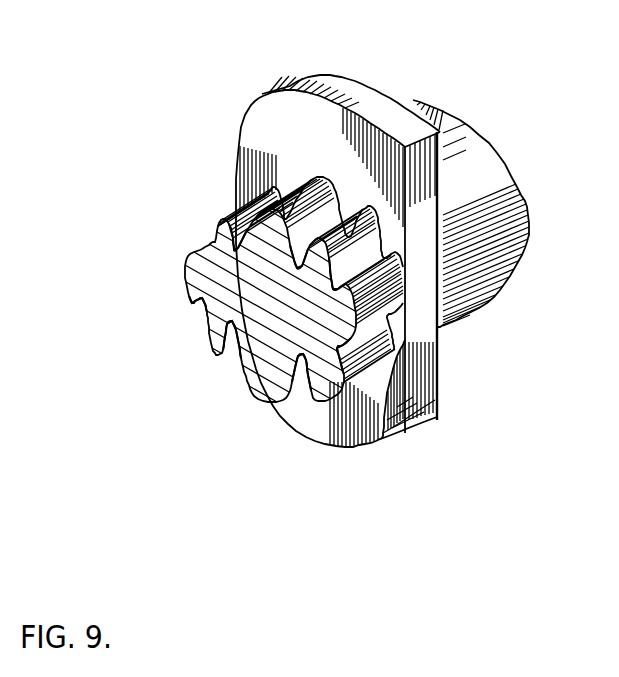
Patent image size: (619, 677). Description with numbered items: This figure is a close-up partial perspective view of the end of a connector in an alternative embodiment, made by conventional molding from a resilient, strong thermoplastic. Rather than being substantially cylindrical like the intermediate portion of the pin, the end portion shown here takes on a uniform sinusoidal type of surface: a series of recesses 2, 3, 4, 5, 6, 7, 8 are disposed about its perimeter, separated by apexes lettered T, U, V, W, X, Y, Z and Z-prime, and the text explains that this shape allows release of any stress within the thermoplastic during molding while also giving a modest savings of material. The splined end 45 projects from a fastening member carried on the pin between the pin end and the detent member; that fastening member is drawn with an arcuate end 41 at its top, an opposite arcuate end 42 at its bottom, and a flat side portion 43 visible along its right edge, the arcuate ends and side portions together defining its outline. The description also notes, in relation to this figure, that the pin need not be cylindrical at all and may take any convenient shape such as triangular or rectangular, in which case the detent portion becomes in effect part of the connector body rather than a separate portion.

The arcuate end 41 is at (375, 91).
The arcuate end 42 is at (406, 436).
The side portion 43 is at (440, 331).
The splined shaft end 45 is at (276, 323).
The recess 2 is at (237, 237).
The recess 3 is at (299, 255).
The recess 4 is at (337, 273).
The recess 5 is at (341, 356).
The recess 6 is at (301, 372).
The recess 7 is at (232, 342).
The recess 8 is at (198, 314).